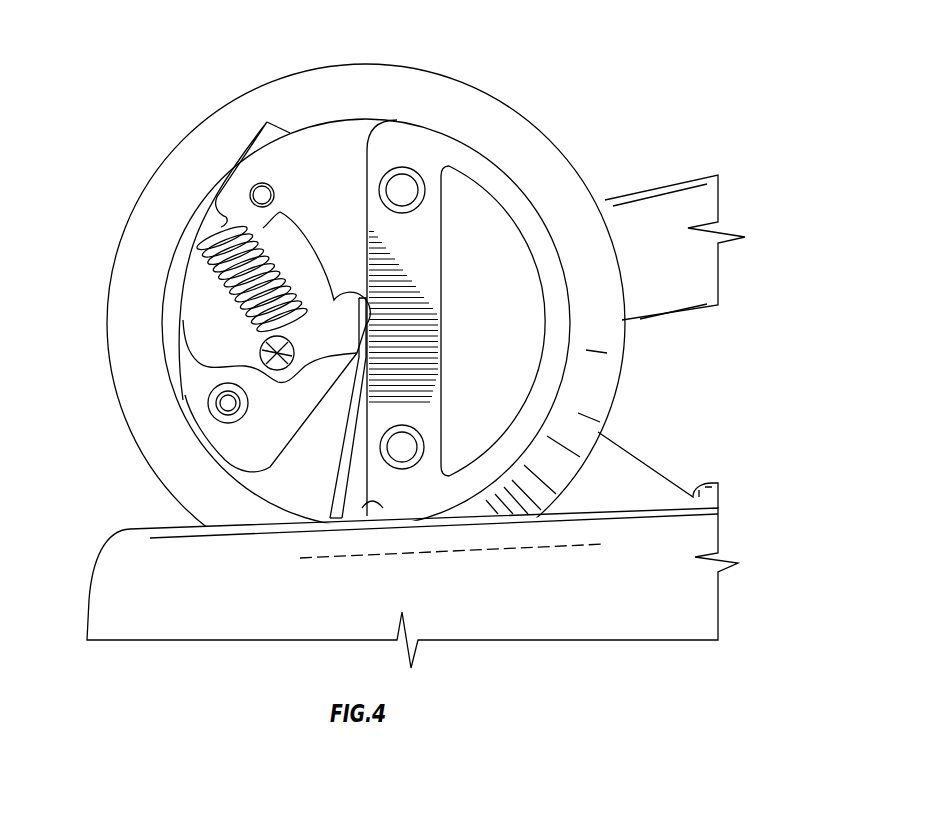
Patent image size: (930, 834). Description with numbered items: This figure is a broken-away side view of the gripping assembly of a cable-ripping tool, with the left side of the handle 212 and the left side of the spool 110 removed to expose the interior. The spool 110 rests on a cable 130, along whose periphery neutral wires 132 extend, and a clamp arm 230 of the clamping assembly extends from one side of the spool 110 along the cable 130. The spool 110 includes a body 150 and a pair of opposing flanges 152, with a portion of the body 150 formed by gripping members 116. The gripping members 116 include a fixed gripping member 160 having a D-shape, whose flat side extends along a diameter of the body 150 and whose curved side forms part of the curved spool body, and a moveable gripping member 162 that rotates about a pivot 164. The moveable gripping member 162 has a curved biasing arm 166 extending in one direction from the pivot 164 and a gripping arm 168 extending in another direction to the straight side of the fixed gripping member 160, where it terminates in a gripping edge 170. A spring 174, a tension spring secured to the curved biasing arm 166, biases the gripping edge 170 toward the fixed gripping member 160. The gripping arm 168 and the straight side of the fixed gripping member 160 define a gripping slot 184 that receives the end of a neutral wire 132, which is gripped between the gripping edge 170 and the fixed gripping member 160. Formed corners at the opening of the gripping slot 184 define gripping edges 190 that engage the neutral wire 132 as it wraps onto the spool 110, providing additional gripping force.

The spool 110 is at (500, 108).
The gripping members 116 is at (290, 121).
The cable 130 is at (130, 528).
The neutral wire 132 is at (328, 500).
The body 150 is at (545, 193).
The opposing flanges 152 is at (230, 130).
The fixed gripping member 160 is at (433, 127).
The moveable gripping member 162 is at (160, 322).
The pivot 164 is at (227, 403).
The curved biasing arm 166 is at (185, 233).
The gripping arm 168 is at (290, 440).
The gripping edge 170 is at (358, 354).
The spring 174 is at (263, 228).
The gripping slot 184 is at (290, 470).
The gripping edges 190 is at (366, 500).
The handle 212 is at (643, 190).
The clamp arm 230 is at (632, 458).